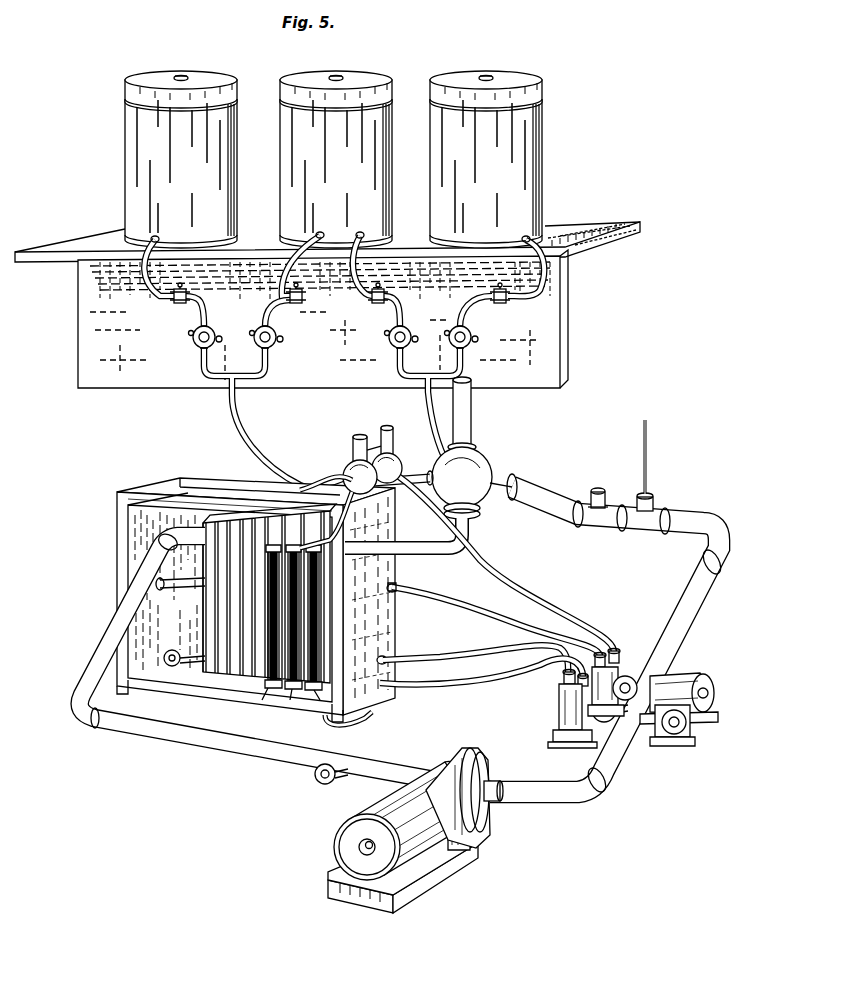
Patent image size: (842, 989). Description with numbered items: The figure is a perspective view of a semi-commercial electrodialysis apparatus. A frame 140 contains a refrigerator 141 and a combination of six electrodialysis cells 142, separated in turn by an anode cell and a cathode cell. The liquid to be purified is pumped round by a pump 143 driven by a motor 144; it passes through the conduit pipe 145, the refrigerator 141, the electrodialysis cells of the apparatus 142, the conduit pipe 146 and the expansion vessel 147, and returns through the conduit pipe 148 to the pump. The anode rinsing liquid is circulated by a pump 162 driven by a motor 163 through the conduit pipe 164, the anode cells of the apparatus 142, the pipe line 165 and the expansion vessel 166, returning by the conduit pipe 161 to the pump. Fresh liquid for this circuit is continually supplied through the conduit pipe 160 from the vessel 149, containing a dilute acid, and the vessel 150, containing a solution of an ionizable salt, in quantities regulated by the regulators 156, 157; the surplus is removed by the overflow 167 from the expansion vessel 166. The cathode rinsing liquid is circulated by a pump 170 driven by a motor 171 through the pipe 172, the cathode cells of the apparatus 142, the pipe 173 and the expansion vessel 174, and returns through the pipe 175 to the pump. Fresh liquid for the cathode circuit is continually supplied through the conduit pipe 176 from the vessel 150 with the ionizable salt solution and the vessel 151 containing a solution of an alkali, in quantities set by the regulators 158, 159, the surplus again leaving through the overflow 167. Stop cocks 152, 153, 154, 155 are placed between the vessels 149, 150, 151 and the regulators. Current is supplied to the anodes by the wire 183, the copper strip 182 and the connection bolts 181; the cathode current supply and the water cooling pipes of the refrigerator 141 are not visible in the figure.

The frame 140 is at (118, 512).
The refrigerator 141 is at (225, 660).
The electrodialysis cells 142 is at (268, 656).
The pump 143 is at (478, 818).
The motor 144 is at (450, 855).
The conduit pipe 145 is at (114, 713).
The conduit pipe 146 is at (404, 586).
The expansion vessel 147 is at (478, 451).
The conduit pipe 148 is at (712, 527).
The vessel 149 is at (138, 128).
The vessel 150 is at (292, 118).
The vessel 151 is at (541, 110).
The stop cock 152 is at (176, 298).
The stop cock 153 is at (300, 302).
The stop cock 154 is at (380, 303).
The stop cock 155 is at (497, 303).
The regulator 156 is at (194, 340).
The regulator 157 is at (276, 344).
The regulator 158 is at (391, 343).
The regulator 159 is at (471, 343).
The conduit pipe 160 is at (233, 405).
The conduit pipe 161 is at (497, 617).
The pump 162 is at (560, 700).
The motor 163 is at (666, 752).
The conduit pipe 164 is at (405, 689).
The pipe line 165 is at (342, 508).
The expansion vessel 166 is at (348, 462).
The overflow 167 is at (390, 448).
The pump 170 is at (626, 662).
The motor 171 is at (682, 676).
The pipe 172 is at (467, 658).
The pipe 173 is at (403, 509).
The expansion vessel 174 is at (373, 440).
The pipe 175 is at (482, 562).
The conduit pipe 176 is at (425, 398).
The connection bolts 181 is at (308, 692).
The copper strip 182 is at (272, 680).
The wire 183 is at (366, 716).